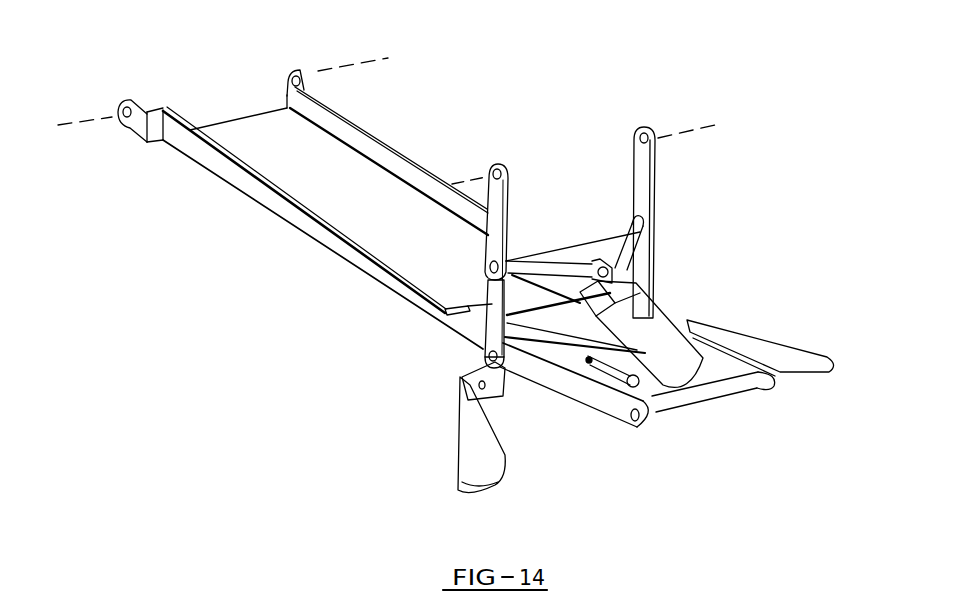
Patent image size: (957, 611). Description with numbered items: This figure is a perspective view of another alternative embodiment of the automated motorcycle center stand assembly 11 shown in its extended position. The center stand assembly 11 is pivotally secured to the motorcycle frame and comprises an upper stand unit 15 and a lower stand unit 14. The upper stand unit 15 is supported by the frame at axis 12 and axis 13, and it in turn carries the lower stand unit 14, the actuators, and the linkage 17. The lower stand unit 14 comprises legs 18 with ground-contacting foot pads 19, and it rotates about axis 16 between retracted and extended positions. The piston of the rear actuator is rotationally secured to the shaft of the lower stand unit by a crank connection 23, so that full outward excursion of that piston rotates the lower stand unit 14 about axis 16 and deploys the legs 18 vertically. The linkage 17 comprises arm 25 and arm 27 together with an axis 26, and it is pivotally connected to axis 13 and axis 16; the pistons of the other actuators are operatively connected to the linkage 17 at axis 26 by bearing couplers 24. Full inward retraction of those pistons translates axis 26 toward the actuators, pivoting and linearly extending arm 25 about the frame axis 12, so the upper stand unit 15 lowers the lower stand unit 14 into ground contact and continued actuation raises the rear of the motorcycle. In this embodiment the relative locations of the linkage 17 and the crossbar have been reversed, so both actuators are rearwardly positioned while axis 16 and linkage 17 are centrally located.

The center stand assembly 11 is at (240, 264).
The axis 12 is at (290, 80).
The axis 13 is at (637, 135).
The lower stand unit 14 is at (438, 438).
The upper stand unit 15 is at (357, 262).
The axis 16 is at (505, 373).
The linkage 17 is at (493, 230).
The legs 18 is at (486, 366).
The ground-contacting foot pads 19 is at (500, 477).
The crank connection 23 is at (616, 350).
The bearing couplers 24 is at (612, 247).
The arm 25 is at (648, 163).
The axis 26 is at (640, 232).
The arm 27 is at (637, 278).